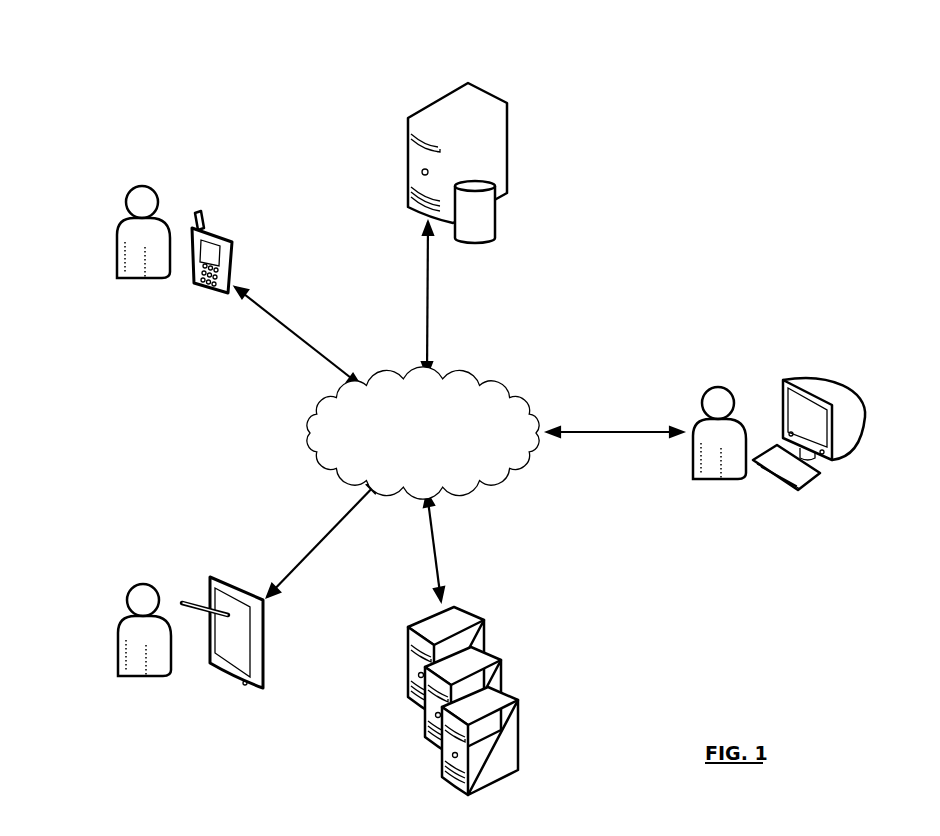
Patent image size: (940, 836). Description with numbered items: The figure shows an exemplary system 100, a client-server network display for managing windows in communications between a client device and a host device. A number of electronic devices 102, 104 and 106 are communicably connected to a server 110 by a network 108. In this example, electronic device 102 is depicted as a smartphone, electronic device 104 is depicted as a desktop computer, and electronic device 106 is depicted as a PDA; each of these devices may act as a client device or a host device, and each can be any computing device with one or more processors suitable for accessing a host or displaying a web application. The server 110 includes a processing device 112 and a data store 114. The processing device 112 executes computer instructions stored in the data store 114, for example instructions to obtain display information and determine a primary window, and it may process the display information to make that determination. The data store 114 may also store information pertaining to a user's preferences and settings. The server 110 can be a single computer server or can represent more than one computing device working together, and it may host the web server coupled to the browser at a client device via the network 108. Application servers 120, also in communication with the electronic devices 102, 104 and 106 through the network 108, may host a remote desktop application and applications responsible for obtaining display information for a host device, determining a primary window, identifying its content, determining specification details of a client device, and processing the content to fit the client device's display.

The system 100 is at (698, 142).
The electronic device 102 is at (215, 230).
The electronic device 104 is at (835, 387).
The electronic device 106 is at (217, 577).
The network 108 is at (447, 380).
The server 110 is at (407, 230).
The processing device 112 is at (485, 93).
The data store 114 is at (495, 240).
The application servers 120 is at (402, 767).